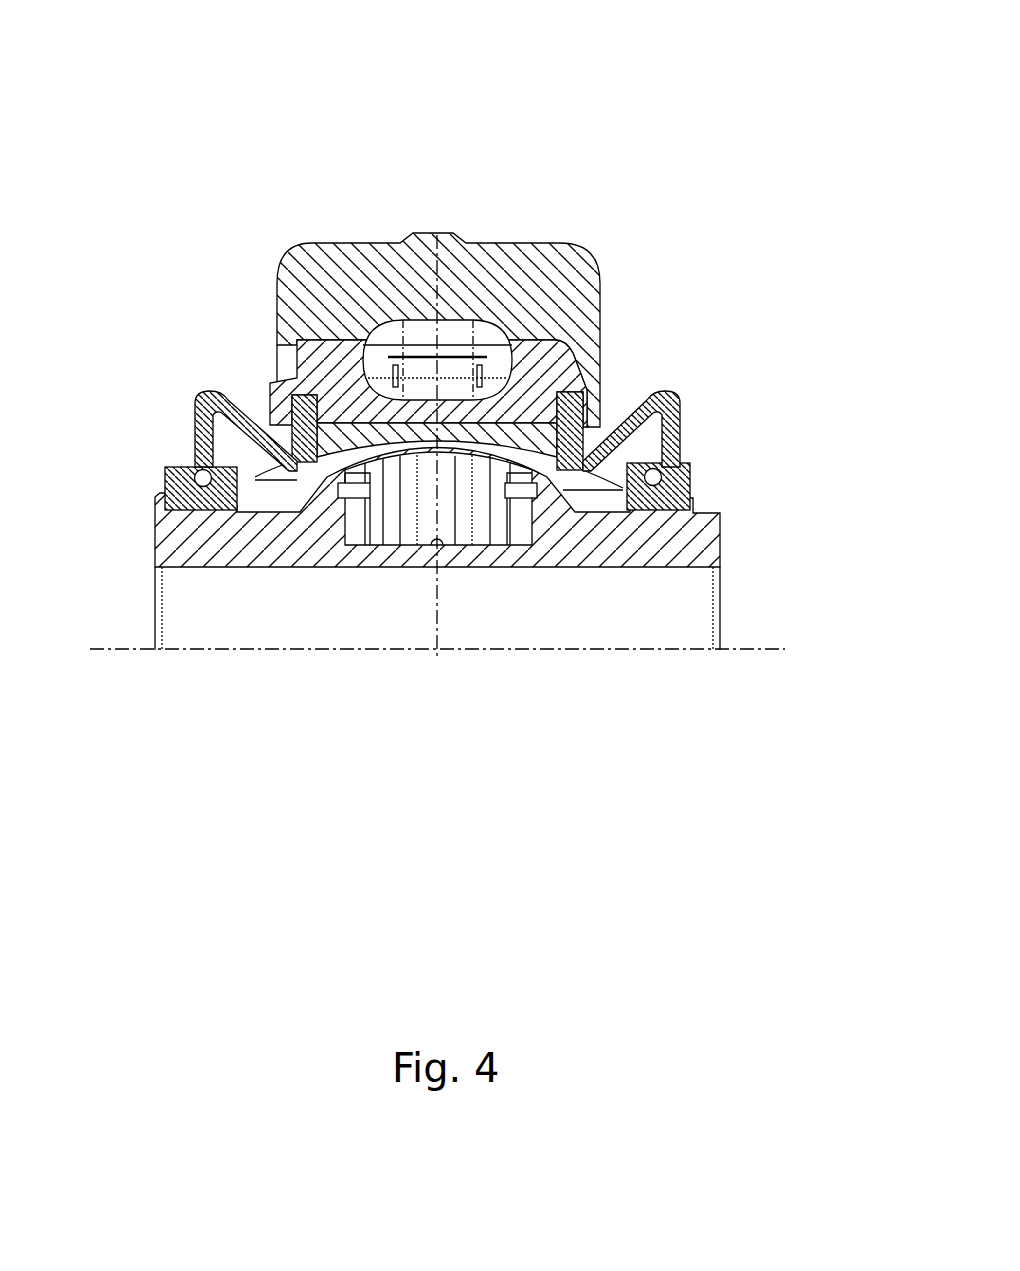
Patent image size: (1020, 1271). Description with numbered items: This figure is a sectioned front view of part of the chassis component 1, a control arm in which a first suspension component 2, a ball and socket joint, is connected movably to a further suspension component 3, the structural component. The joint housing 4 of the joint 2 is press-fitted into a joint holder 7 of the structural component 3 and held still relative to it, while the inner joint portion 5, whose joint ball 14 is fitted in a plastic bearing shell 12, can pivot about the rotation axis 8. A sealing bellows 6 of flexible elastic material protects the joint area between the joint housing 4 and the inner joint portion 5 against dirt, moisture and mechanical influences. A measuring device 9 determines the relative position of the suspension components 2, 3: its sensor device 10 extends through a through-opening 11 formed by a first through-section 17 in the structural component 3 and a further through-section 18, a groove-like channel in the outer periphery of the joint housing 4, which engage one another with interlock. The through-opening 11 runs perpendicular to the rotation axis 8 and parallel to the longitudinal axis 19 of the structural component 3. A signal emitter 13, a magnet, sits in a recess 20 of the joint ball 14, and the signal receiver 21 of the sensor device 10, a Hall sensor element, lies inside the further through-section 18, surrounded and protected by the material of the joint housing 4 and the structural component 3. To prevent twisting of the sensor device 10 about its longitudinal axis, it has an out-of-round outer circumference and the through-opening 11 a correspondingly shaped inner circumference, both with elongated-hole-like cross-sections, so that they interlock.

The chassis component 1 is at (608, 110).
The first suspension component 2 is at (149, 392).
The further suspension component 3 is at (599, 252).
The joint housing 4 is at (597, 387).
The inner joint portion 5 is at (719, 548).
The sealing bellows 6 is at (207, 392).
The joint holder 7 is at (281, 344).
The rotation axis 8 is at (748, 650).
The measuring device 9 is at (658, 322).
The sensor device 10 is at (506, 309).
The through-opening 11 is at (365, 335).
The bearing shell 12 is at (610, 490).
The signal emitter 13 is at (392, 532).
The joint ball 14 is at (560, 500).
The first through-section 17 is at (395, 308).
The further through-section 18 is at (349, 381).
The longitudinal axis 19 is at (440, 650).
The recess 20 is at (507, 545).
The signal receiver 21 is at (456, 334).